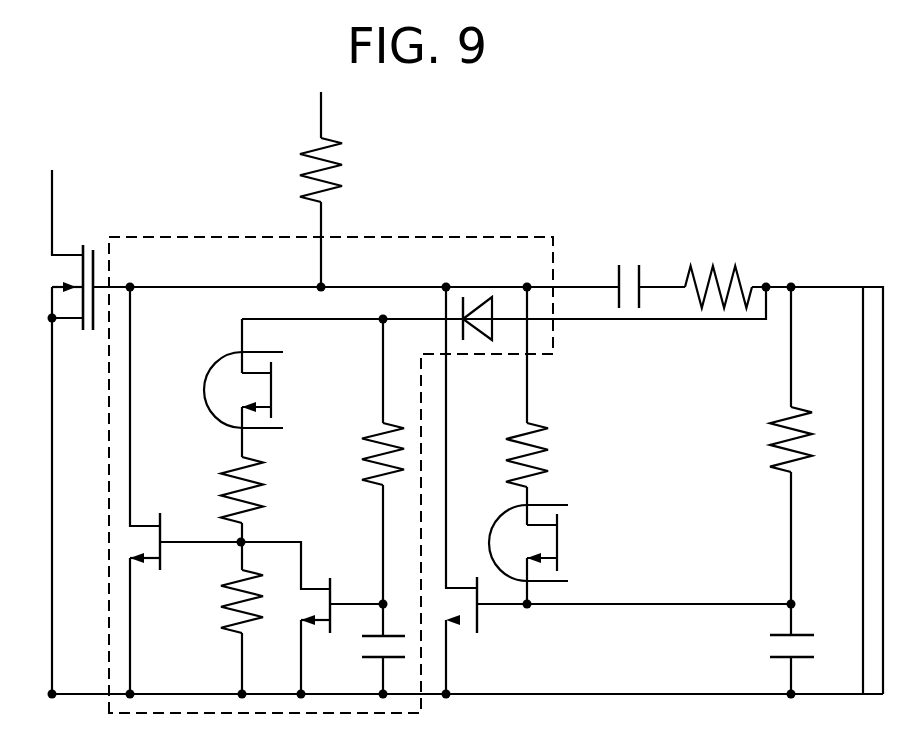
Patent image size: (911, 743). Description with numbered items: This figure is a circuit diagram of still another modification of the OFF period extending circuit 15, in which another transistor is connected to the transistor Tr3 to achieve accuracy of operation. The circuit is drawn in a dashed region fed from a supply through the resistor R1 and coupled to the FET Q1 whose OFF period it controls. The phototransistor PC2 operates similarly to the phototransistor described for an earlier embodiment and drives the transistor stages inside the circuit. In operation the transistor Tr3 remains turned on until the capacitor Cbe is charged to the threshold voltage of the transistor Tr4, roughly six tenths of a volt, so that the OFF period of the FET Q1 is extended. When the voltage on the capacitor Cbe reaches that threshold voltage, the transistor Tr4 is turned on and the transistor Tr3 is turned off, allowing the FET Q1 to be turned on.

The OFF period extending circuit 15 is at (183, 237).
The phototransistor PC2 is at (165, 317).
The FET Q1 is at (53, 287).
The resistor R1 is at (339, 189).
The transistor Tr3 is at (110, 540).
The transistor Tr4 is at (324, 589).
The capacitor Cbe is at (401, 624).